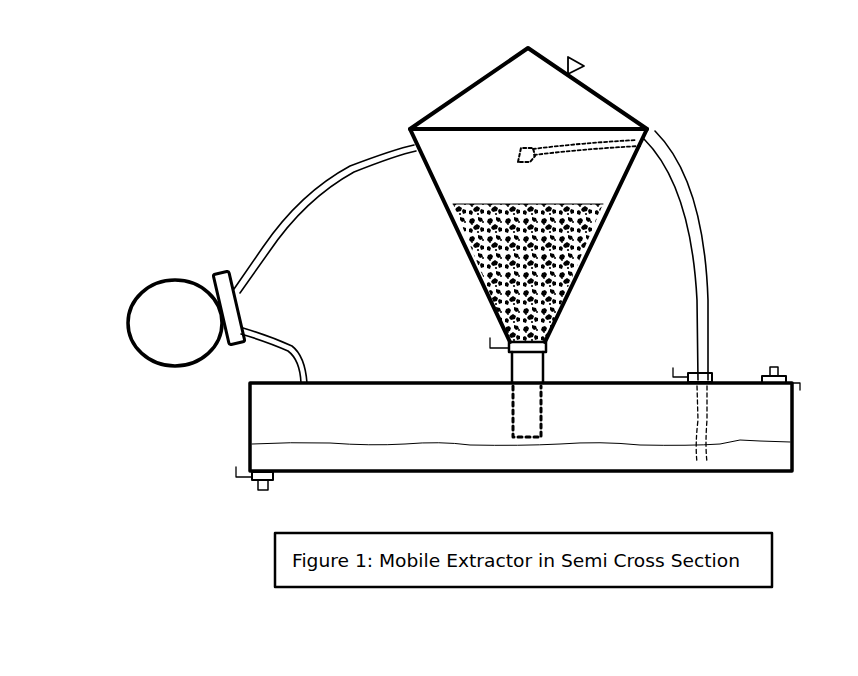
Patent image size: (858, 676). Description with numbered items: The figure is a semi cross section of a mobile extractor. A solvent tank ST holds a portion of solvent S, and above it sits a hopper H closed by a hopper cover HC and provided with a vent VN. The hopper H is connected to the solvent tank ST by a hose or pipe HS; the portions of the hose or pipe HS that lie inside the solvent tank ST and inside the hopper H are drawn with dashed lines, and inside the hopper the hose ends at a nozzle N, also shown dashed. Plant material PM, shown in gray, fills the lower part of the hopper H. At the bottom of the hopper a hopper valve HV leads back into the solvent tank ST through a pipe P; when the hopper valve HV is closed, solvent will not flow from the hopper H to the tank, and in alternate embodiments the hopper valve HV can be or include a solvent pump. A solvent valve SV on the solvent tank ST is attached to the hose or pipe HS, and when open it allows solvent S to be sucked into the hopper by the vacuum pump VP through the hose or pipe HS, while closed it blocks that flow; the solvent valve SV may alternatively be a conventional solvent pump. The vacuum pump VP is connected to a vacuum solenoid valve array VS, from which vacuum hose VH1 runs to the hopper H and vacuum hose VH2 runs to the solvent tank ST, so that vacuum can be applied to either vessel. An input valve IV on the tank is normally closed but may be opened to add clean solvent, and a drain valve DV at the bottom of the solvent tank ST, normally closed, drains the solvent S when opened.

The hopper H is at (430, 178).
The hopper cover HC is at (450, 100).
The vent VN is at (588, 63).
The nozzle N is at (519, 151).
The plant material PM is at (568, 263).
The hopper valve HV is at (547, 349).
The pipe P is at (512, 413).
The solvent tank ST is at (248, 413).
The solvent S is at (631, 449).
The solvent valve SV is at (712, 373).
The input valve IV is at (781, 367).
The drain valve DV is at (252, 483).
The vacuum pump VP is at (175, 323).
The vacuum solenoid valve array VS is at (226, 282).
The vacuum hose VH1 is at (293, 198).
The vacuum hose VH2 is at (308, 358).
The hose or pipe HS is at (661, 183).